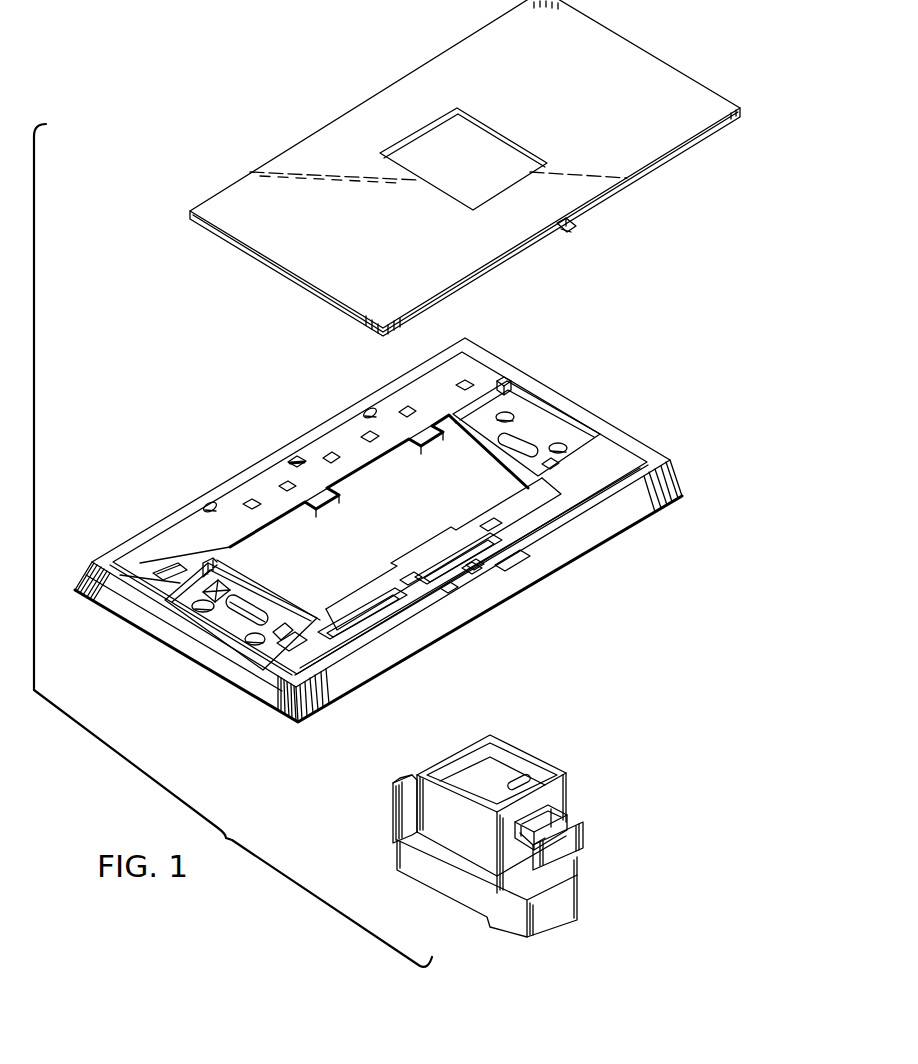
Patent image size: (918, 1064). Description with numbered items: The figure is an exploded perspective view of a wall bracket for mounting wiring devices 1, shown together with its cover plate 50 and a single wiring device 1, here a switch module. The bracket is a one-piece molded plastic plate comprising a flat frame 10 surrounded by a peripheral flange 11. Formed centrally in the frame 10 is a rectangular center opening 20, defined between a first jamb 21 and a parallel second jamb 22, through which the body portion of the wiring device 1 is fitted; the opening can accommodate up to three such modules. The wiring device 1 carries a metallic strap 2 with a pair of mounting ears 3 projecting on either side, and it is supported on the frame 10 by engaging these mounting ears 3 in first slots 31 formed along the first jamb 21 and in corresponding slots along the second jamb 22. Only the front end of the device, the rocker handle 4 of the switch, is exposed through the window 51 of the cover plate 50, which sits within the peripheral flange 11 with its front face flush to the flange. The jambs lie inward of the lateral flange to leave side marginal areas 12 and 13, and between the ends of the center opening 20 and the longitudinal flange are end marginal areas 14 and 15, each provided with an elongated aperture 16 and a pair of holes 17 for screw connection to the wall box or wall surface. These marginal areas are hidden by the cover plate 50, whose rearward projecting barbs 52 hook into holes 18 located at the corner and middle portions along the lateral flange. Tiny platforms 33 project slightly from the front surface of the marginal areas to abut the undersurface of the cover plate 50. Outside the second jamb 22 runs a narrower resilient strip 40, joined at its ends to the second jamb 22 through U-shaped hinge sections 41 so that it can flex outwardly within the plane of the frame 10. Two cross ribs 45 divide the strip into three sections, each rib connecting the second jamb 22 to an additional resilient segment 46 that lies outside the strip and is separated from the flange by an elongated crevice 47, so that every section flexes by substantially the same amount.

The wiring device 1 is at (578, 779).
The metallic strap 2 is at (580, 831).
The mounting ears 3 is at (170, 405).
The rocker handle 4 is at (500, 752).
The flat frame 10 is at (678, 461).
The peripheral flange 11 is at (333, 432).
The side marginal area 12 is at (262, 490).
The side marginal area 13 is at (570, 510).
The end marginal area 14 is at (557, 415).
The end marginal area 15 is at (236, 620).
The elongated aperture 16 is at (520, 443).
The holes 17 is at (572, 447).
The holes 18 is at (296, 462).
The center opening 20 is at (505, 383).
The first jamb 21 is at (326, 486).
The second jamb 22 is at (441, 549).
The first slots 31 is at (285, 483).
The tiny platforms 33 is at (208, 502).
The resilient strip 40 is at (505, 572).
The U-shaped hinge sections 41 is at (672, 490).
The cross ribs 45 is at (490, 530).
The additional resilient segment 46 is at (530, 546).
The elongated crevice 47 is at (446, 590).
The cover plate 50 is at (190, 213).
The window 51 is at (413, 133).
The barbs 52 is at (573, 232).